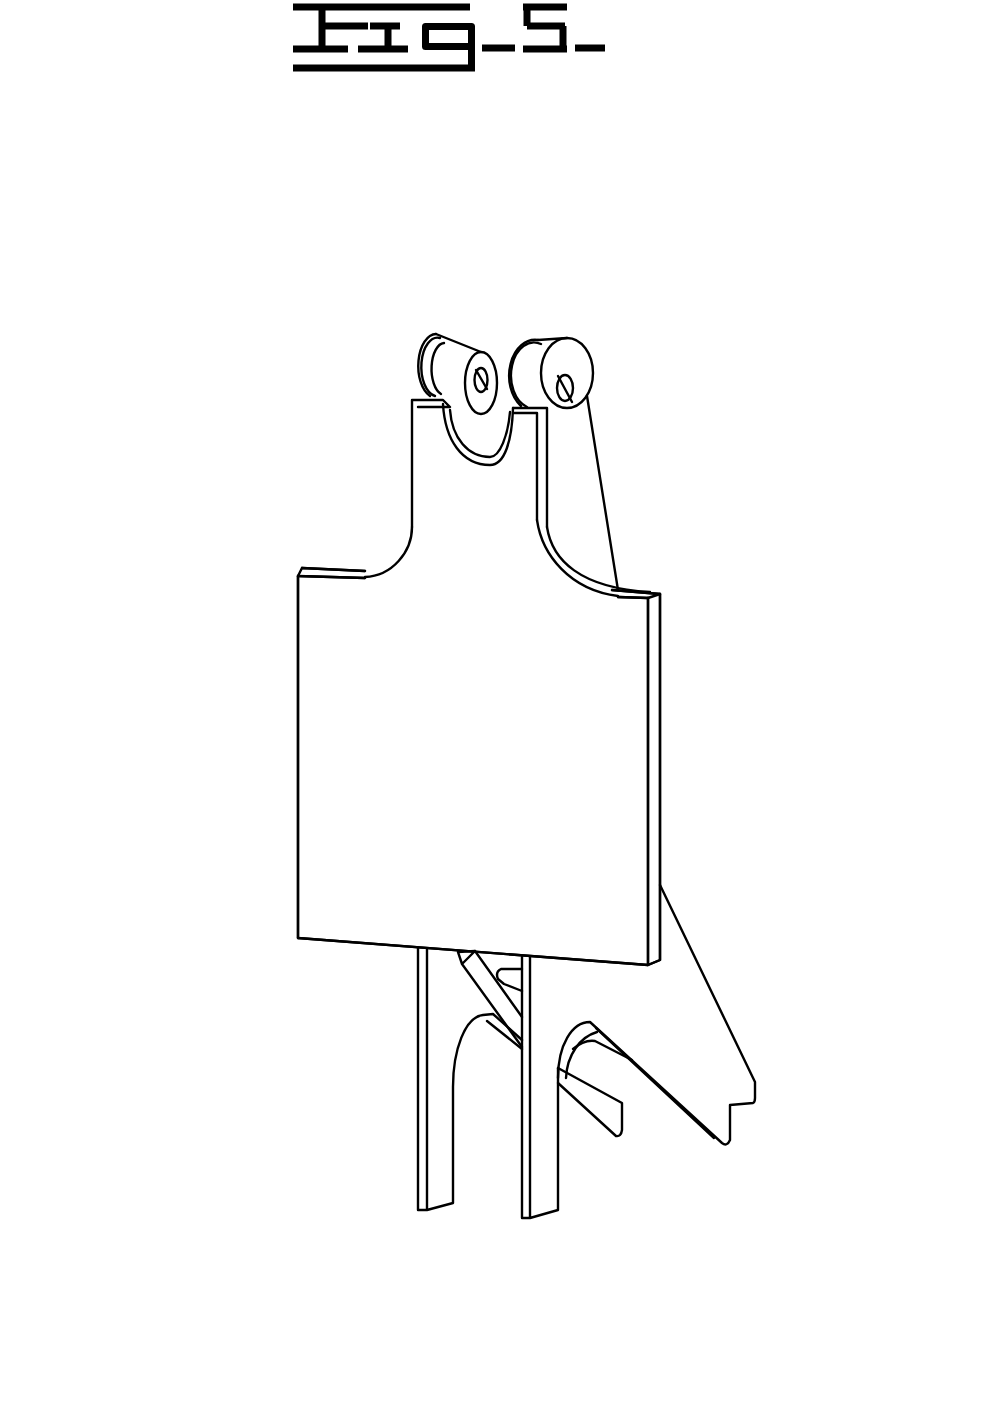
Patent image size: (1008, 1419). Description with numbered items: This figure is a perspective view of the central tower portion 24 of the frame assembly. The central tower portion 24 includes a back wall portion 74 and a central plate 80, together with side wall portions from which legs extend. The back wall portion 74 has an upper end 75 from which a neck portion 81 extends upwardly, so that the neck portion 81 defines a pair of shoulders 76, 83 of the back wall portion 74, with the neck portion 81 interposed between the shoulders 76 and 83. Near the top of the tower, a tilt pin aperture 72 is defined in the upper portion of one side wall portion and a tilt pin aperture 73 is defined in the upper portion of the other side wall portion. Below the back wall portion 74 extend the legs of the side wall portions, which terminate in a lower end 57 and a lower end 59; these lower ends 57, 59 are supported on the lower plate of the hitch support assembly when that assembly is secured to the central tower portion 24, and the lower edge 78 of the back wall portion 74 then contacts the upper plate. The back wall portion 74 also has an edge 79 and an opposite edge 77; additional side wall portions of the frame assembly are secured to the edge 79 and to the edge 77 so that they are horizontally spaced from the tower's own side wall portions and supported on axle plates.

The central tower portion 24 is at (437, 315).
The lower end of leg 57 is at (550, 1217).
The lower end of leg 59 is at (445, 1212).
The tilt pin aperture 72 is at (586, 390).
The tilt pin aperture 73 is at (493, 366).
The back wall portion 74 is at (333, 607).
The upper end of back wall portion 75 is at (647, 590).
The shoulder 76 is at (349, 572).
The edge of back wall portion 77 is at (658, 680).
The lower edge of back wall portion 78 is at (335, 943).
The edge of back wall portion 79 is at (298, 670).
The central plate 80 is at (638, 1087).
The neck portion 81 is at (427, 455).
The shoulder 83 is at (630, 590).